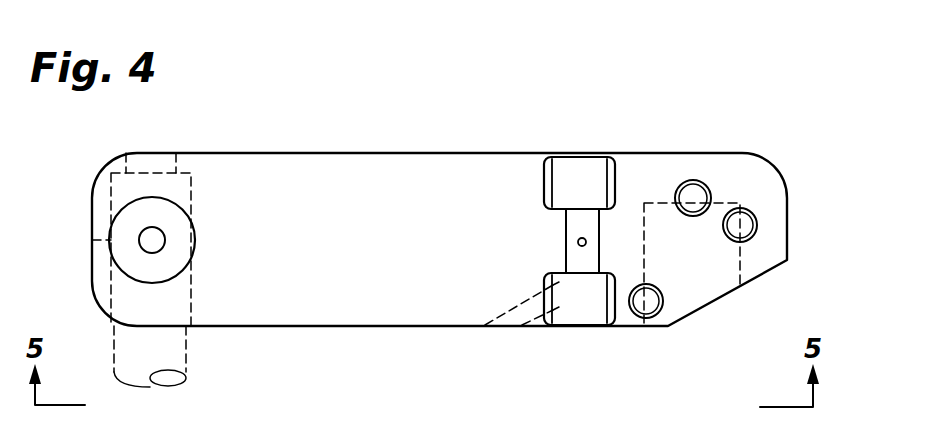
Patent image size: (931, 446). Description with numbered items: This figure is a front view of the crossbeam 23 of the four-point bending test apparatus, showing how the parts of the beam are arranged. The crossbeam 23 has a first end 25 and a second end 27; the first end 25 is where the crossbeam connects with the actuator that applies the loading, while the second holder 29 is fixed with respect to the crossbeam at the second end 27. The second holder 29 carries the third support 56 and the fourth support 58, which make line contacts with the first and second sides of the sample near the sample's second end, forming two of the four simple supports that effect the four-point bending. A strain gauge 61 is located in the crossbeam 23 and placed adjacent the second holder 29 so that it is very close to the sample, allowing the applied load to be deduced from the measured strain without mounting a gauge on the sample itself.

The crossbeam 23 is at (410, 166).
The first end 25 is at (107, 285).
The second end 27 is at (661, 166).
The second holder 29 is at (720, 202).
The third support 56 is at (747, 221).
The fourth support 58 is at (655, 306).
The strain gauge 61 is at (573, 170).